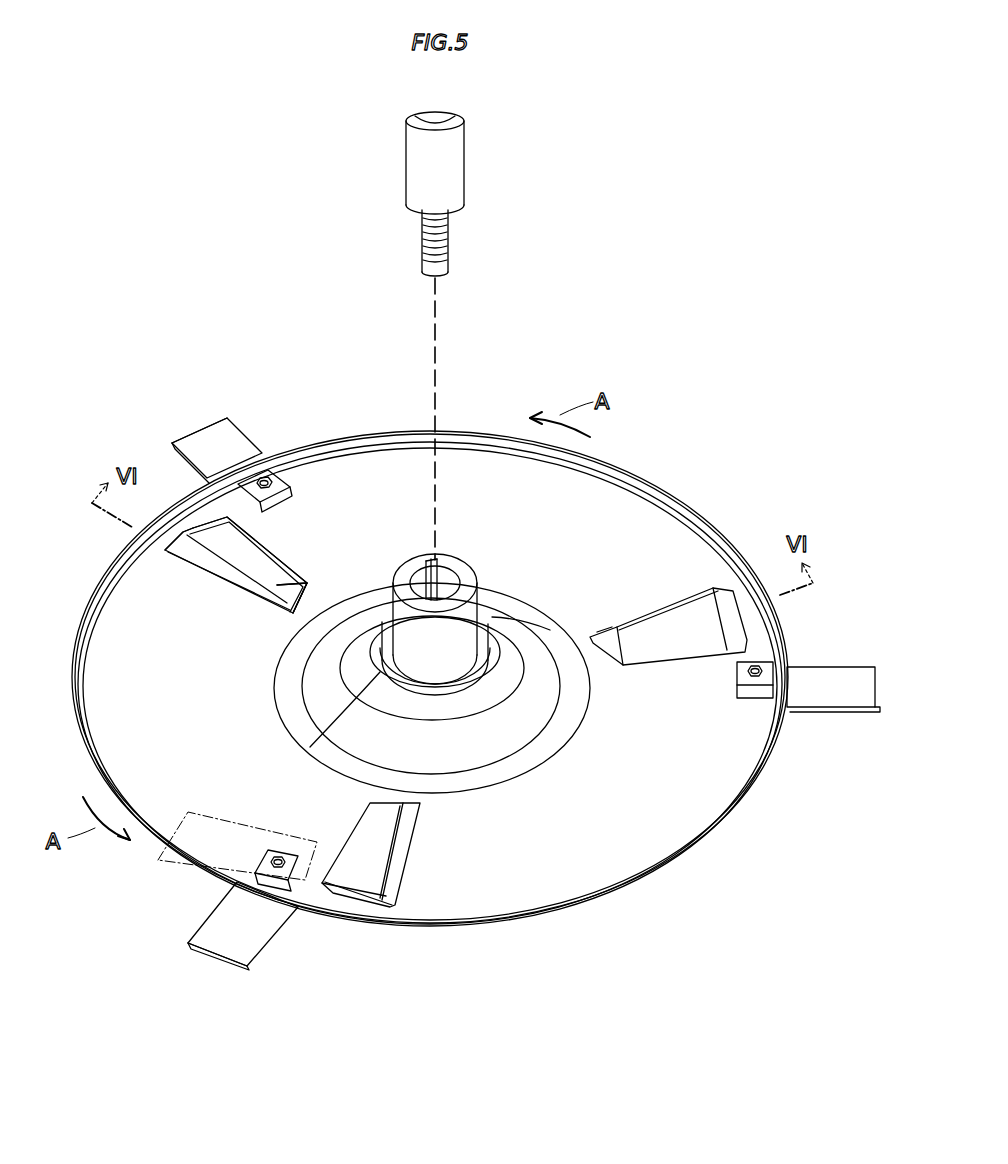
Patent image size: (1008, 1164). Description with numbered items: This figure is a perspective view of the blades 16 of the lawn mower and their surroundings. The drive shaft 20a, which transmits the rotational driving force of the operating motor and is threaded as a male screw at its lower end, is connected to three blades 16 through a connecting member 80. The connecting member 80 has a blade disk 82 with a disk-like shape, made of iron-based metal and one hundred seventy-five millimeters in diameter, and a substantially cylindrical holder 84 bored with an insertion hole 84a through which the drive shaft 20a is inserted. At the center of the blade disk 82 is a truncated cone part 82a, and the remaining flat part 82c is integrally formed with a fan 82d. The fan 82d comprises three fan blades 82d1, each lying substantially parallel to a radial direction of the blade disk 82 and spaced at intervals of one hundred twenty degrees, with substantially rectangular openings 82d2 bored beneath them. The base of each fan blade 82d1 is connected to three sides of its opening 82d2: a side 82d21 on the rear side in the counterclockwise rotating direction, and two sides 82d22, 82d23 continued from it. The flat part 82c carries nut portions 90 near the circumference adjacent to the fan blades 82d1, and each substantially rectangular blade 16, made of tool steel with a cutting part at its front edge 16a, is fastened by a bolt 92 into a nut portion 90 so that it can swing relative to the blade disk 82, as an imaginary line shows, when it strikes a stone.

The drive shaft 20a is at (466, 160).
The connecting member 80 is at (630, 452).
The blade disk 82 is at (660, 486).
The truncated cone part 82a is at (493, 732).
The flat part 82c is at (655, 773).
The fan 82d is at (273, 528).
The fan blade 82d1 is at (293, 570).
The opening 82d2 is at (222, 575).
The side 82d21 is at (275, 565).
The side 82d22 is at (175, 547).
The side 82d23 is at (283, 617).
The holder 84 is at (480, 576).
The insertion hole 84a is at (456, 572).
The blade 16 is at (203, 437).
The edge 16a is at (173, 440).
The nut portion 90 is at (252, 473).
The bolt 92 is at (263, 473).